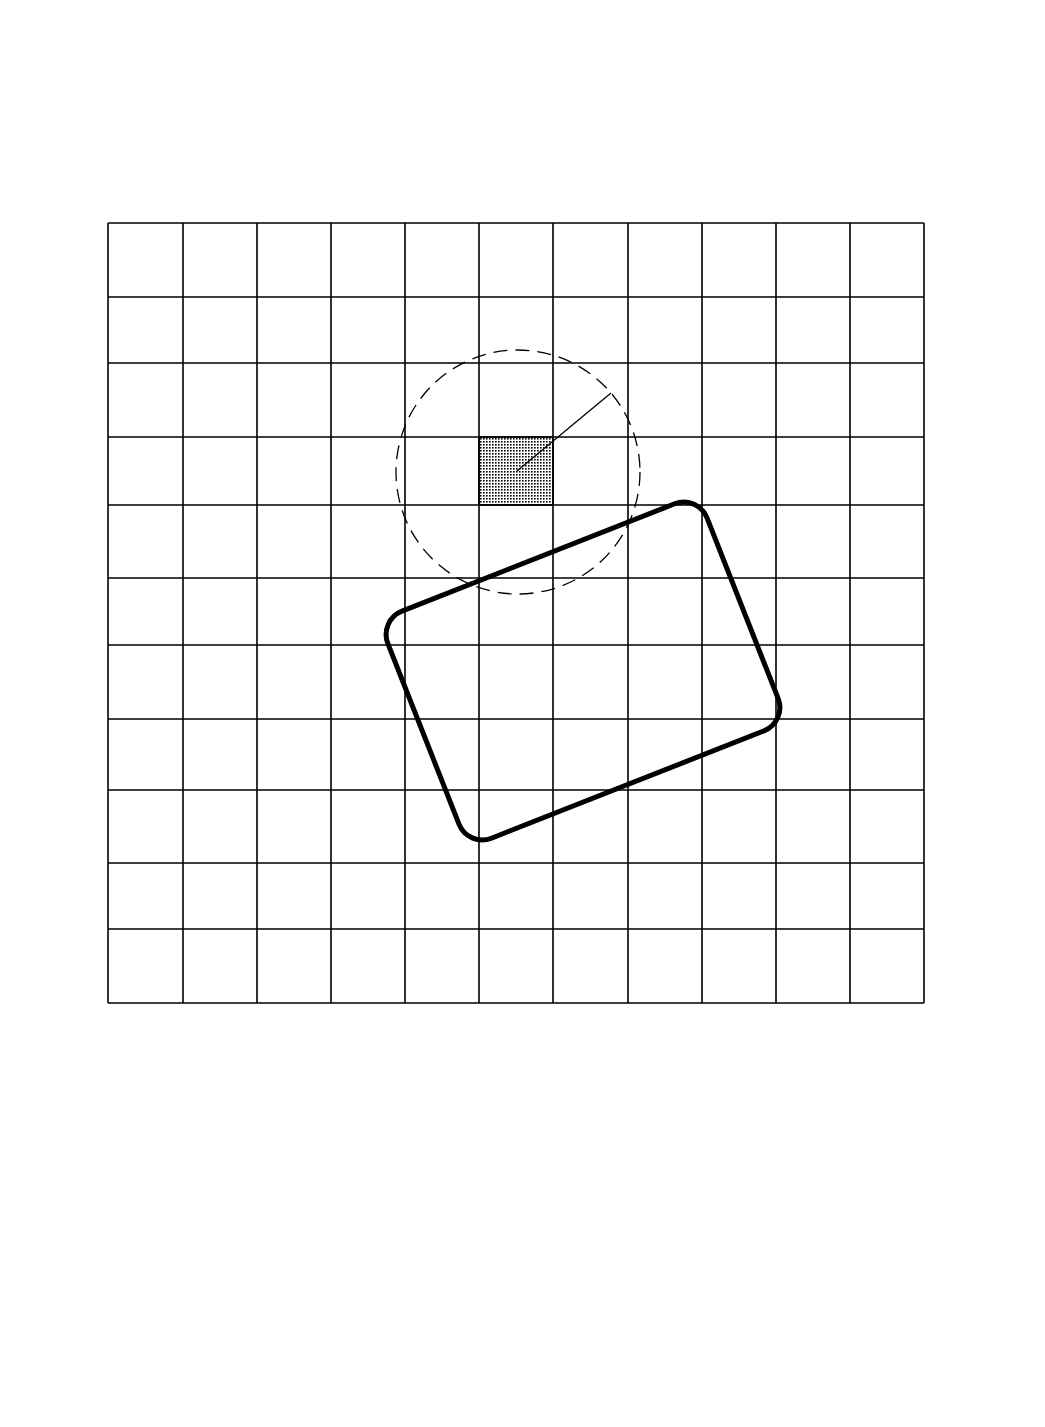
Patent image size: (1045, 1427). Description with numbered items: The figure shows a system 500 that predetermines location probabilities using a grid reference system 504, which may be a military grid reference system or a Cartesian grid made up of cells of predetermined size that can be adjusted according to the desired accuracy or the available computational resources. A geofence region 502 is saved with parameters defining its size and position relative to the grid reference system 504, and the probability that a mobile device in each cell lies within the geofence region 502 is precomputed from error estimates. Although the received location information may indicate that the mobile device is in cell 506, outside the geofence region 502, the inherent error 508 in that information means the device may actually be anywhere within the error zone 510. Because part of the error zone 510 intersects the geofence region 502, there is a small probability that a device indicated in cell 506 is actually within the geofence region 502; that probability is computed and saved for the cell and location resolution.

The system 500 is at (141, 36).
The geofence region 502 is at (407, 697).
The grid reference system 504 is at (505, 222).
The cell 506 is at (503, 485).
The error 508 is at (575, 421).
The error zone 510 is at (420, 402).